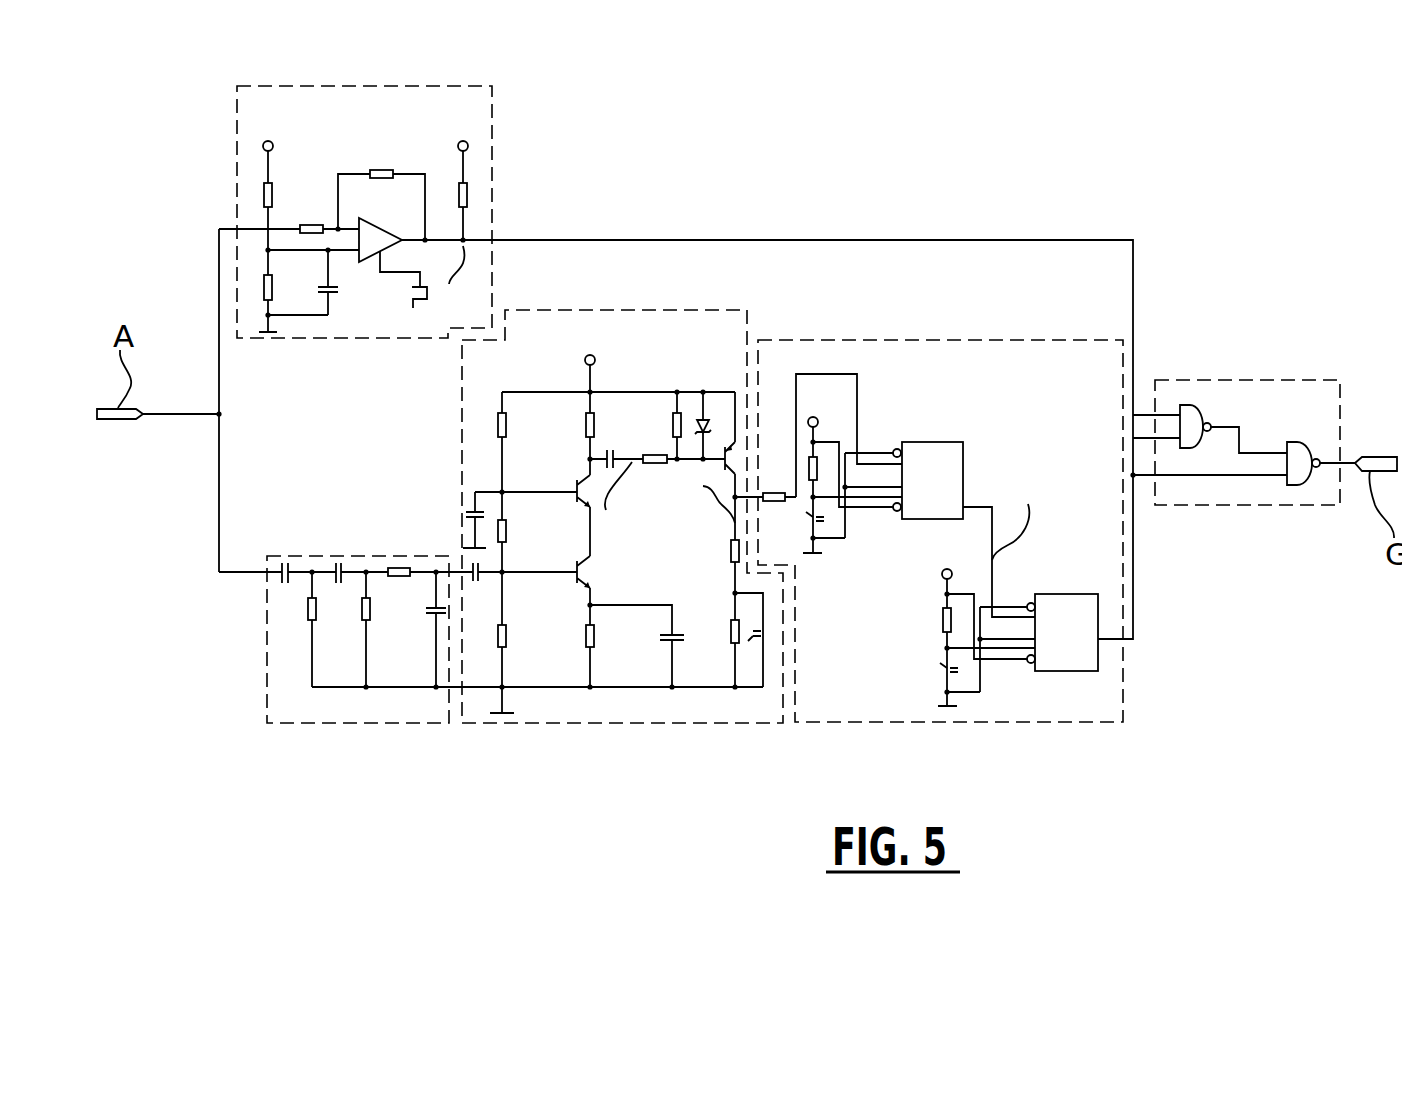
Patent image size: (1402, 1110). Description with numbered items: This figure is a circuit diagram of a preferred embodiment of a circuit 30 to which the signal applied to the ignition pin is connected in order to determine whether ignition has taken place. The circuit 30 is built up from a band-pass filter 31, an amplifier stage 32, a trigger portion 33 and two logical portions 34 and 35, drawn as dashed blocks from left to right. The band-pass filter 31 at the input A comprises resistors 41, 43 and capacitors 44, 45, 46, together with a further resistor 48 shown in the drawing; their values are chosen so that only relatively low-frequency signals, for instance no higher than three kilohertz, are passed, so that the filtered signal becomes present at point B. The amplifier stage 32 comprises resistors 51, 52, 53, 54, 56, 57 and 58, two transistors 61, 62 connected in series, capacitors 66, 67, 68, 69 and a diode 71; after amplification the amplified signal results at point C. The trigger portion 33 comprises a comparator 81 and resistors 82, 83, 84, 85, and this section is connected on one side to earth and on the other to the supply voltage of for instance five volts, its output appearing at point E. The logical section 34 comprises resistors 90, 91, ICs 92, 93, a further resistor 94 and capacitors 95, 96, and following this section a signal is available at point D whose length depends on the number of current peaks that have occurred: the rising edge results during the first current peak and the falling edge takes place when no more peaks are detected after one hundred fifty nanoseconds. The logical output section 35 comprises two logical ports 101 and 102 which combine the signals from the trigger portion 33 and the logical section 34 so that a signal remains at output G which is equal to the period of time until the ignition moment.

The circuit 30 is at (912, 168).
The band-pass filter 31 is at (210, 775).
The amplifier stage 32 is at (578, 790).
The trigger portion 33 is at (527, 110).
The logical portion 34 is at (1140, 785).
The logical output portion 35 is at (1222, 553).
The resistor 41 is at (308, 610).
The resistor 43 is at (400, 568).
The capacitor 44 is at (285, 568).
The capacitor 45 is at (338, 568).
The capacitor 46 is at (428, 606).
The resistor 48 is at (362, 612).
The resistor 51 is at (500, 425).
The resistor 52 is at (507, 530).
The resistor 53 is at (507, 632).
The resistor 54 is at (585, 419).
The resistor 56 is at (670, 425).
The resistor 57 is at (595, 632).
The resistor 58 is at (731, 632).
The transistor 61 is at (583, 568).
The transistor 62 is at (576, 483).
The capacitor 66 is at (466, 513).
The capacitor 67 is at (482, 577).
The capacitor 68 is at (680, 641).
The capacitor 69 is at (763, 633).
The diode 71 is at (705, 428).
The comparator 81 is at (368, 253).
The resistor 82 is at (385, 172).
The resistor 83 is at (312, 225).
The resistor 84 is at (264, 198).
The resistor 85 is at (263, 281).
The resistor 90 is at (818, 470).
The resistor 91 is at (650, 463).
The IC 92 is at (933, 450).
The IC 93 is at (1073, 598).
The further resistor 94 is at (943, 618).
The capacitor 95 is at (940, 668).
The capacitor 96 is at (806, 514).
The logical port 101 is at (1188, 422).
The logical port 102 is at (1300, 468).